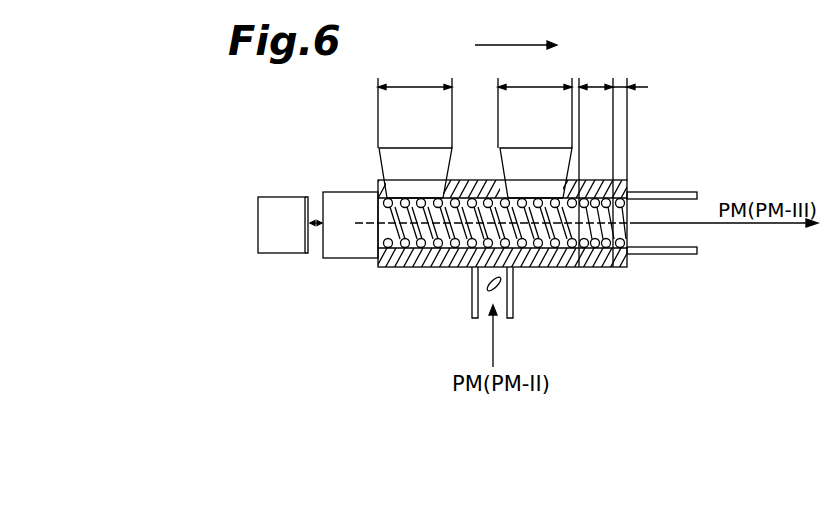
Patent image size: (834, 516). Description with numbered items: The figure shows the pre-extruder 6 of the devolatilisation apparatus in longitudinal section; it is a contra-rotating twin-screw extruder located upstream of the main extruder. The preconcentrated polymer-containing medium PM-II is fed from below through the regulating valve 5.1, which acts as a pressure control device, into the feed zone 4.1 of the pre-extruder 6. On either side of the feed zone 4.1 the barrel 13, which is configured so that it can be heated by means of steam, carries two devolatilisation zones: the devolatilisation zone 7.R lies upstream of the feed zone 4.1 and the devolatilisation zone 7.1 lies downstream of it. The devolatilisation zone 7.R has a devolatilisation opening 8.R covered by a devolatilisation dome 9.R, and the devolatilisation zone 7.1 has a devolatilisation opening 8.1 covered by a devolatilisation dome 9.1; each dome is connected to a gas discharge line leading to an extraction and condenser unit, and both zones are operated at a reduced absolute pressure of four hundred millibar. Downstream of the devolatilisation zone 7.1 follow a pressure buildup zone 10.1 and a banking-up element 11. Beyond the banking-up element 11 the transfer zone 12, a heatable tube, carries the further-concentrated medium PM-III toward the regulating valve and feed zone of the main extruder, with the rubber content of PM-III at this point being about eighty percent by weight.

The pre-extruder 6 is at (516, 33).
The devolatilisation zone 7.R is at (415, 102).
The devolatilisation zone 7.1 is at (535, 102).
The devolatilisation opening 8.R is at (403, 200).
The devolatilisation opening 8.1 is at (523, 198).
The devolatilisation dome 9.R is at (420, 150).
The devolatilisation dome 9.1 is at (542, 152).
The pressure buildup zone 10.1 is at (596, 163).
The banking-up element 11 is at (618, 80).
The transfer zone 12 is at (675, 235).
The barrel 13 is at (395, 267).
The regulating valve 5.1 is at (473, 287).
The feed zone 4.1 is at (513, 270).